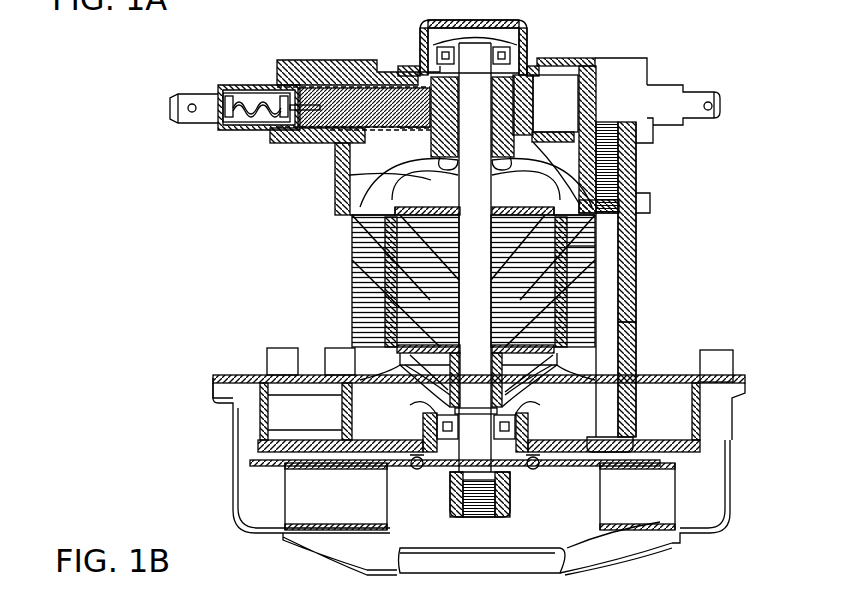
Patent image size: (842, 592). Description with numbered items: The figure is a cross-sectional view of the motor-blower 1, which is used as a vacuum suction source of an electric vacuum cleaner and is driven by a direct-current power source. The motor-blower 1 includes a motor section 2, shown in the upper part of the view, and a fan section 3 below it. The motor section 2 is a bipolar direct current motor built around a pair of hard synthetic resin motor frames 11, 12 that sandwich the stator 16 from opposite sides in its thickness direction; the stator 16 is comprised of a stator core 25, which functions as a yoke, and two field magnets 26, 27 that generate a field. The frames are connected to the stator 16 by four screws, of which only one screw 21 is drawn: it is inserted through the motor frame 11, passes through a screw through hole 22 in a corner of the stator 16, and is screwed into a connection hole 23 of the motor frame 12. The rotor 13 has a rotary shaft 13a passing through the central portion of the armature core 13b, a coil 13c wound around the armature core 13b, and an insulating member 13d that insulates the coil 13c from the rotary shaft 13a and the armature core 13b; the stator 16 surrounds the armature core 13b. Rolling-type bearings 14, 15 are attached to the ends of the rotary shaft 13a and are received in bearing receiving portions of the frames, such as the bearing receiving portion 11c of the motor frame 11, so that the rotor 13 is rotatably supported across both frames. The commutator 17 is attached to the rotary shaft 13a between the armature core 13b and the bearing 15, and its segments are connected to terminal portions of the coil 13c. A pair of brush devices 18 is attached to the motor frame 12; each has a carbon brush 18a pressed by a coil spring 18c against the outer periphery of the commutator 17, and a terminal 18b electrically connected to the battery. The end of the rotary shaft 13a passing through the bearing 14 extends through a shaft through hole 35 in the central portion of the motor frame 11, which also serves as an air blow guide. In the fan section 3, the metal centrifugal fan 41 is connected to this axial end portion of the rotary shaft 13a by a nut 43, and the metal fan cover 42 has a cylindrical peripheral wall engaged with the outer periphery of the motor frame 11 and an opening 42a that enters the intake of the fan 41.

The motor-blower 1 is at (672, 62).
The motor section 2 is at (640, 258).
The fan section 3 is at (233, 505).
The motor frame 11 is at (260, 455).
The bearing receiving portion 11c is at (634, 372).
The motor frame 12 is at (590, 68).
The rotor 13 is at (405, 176).
The rotary shaft 13a is at (508, 163).
The armature core 13b is at (542, 220).
The coil 13c is at (412, 372).
The insulating member 13d is at (336, 158).
The bearing 14 is at (433, 419).
The bearing 15 is at (433, 47).
The stator 16 is at (353, 282).
The commutator 17 is at (515, 112).
The brush device 18 is at (249, 130).
The carbon brush 18a is at (374, 90).
The terminal 18b is at (192, 104).
The coil spring 18c is at (249, 95).
The screw 21 is at (612, 331).
The screw through hole 22 is at (622, 262).
The connection hole 23 is at (620, 191).
The stator core 25 is at (355, 254).
The field magnet 26 is at (390, 288).
The field magnet 27 is at (595, 246).
The shaft through hole 35 is at (522, 468).
The centrifugal fan 41 is at (674, 546).
The fan cover 42 is at (335, 552).
The opening 42a is at (545, 560).
The nut 43 is at (452, 498).